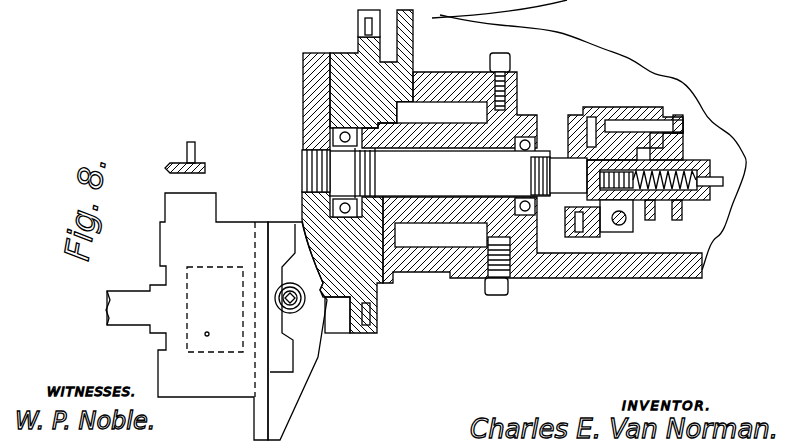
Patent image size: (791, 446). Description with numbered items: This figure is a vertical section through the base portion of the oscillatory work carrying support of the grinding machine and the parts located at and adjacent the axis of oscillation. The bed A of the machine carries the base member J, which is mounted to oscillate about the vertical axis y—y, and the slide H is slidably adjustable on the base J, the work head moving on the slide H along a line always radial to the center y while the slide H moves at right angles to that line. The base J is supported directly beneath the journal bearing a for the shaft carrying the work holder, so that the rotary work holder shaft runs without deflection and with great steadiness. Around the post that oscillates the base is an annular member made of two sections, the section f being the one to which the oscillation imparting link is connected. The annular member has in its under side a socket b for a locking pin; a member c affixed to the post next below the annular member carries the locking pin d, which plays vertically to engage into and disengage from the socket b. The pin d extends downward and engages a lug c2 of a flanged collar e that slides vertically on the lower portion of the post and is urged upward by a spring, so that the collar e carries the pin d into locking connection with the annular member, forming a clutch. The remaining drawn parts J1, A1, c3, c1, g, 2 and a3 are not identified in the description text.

The base member J is at (303, 88).
The housing boss J1 is at (352, 56).
The supporting frame or bed A is at (497, 173).
The spindle bearings A1 is at (413, 67).
The section of the annular member f is at (544, 155).
The socket b is at (577, 115).
The member affixed to the post c is at (608, 110).
The lug or projection c2 is at (630, 110).
The clamp nut c3 is at (676, 115).
The bracket leg c1 is at (683, 152).
The vertical axis of oscillation y is at (742, 182).
The flanged collar e is at (683, 217).
The locking pin d is at (640, 262).
The stop piece g is at (565, 220).
The lever 2 is at (592, 100).
The journal bearing a is at (187, 316).
The T-bolt a3 is at (157, 180).
The slide H is at (277, 367).